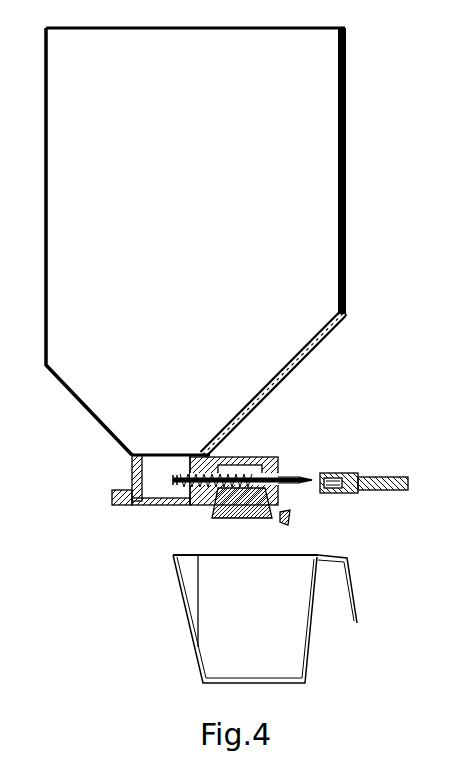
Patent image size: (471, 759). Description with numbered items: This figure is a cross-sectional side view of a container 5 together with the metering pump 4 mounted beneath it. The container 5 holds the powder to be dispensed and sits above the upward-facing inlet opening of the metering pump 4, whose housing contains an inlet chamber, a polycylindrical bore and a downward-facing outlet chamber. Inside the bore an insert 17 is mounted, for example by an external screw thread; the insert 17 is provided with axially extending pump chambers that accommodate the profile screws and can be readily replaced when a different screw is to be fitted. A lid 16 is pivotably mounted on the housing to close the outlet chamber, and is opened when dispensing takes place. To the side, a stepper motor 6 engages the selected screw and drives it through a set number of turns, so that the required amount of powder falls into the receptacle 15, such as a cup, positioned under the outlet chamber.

The container 5 is at (129, 425).
The metering pump 4 is at (112, 492).
The insert 17 is at (250, 457).
The lid 16 is at (215, 508).
The stepper motor 6 is at (372, 483).
The receptacle 15 is at (222, 593).